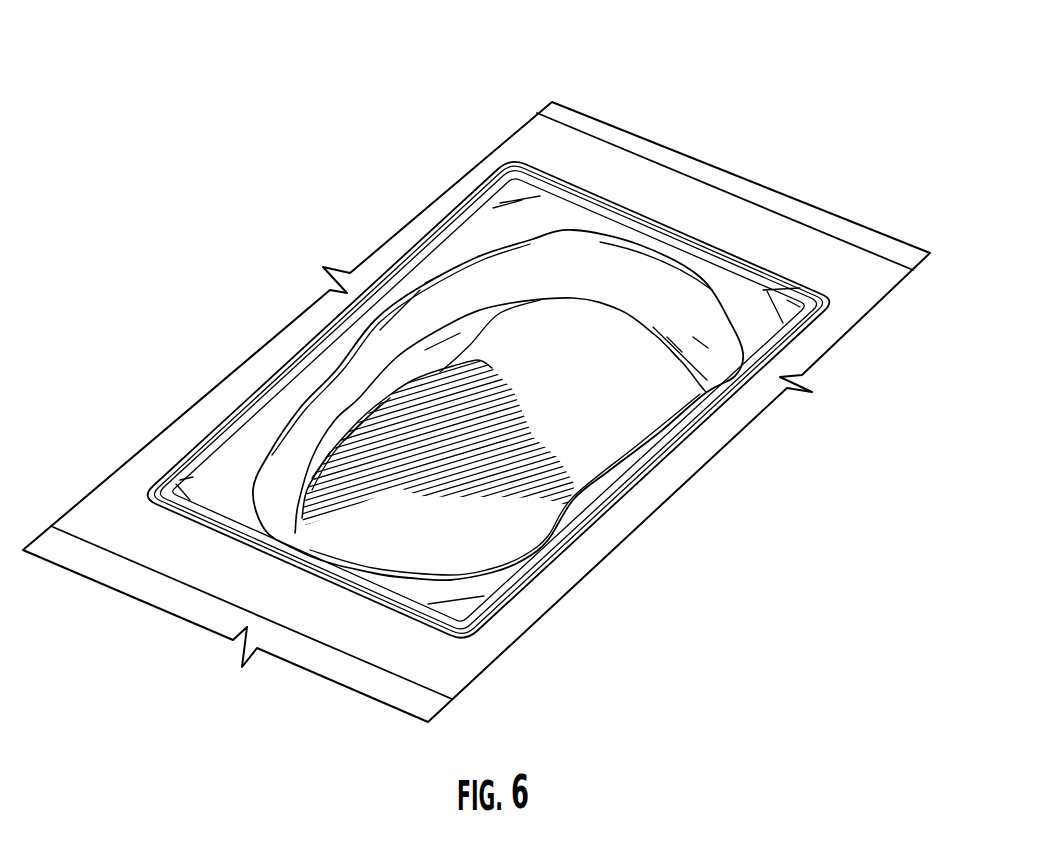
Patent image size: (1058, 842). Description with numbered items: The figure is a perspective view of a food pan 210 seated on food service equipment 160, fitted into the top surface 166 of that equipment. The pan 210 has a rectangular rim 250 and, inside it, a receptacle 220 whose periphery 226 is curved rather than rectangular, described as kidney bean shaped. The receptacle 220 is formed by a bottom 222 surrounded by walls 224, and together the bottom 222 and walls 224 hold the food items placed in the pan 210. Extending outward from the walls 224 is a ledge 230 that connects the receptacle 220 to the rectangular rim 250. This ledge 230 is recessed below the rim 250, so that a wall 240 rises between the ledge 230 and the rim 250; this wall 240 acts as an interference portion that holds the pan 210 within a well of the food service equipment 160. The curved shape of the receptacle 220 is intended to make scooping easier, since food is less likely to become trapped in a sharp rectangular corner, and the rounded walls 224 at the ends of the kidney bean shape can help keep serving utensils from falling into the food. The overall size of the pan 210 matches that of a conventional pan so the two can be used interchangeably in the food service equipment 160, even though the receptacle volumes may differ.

The food service equipment 160 is at (759, 221).
The top surface 166 is at (791, 263).
The pan 210 is at (489, 106).
The receptacle 220 is at (425, 548).
The bottom 222 is at (548, 392).
The walls 224 is at (355, 371).
The periphery 226 is at (573, 298).
The ledge 230 is at (543, 220).
The wall 240 is at (255, 428).
The rectangular rim 250 is at (191, 500).